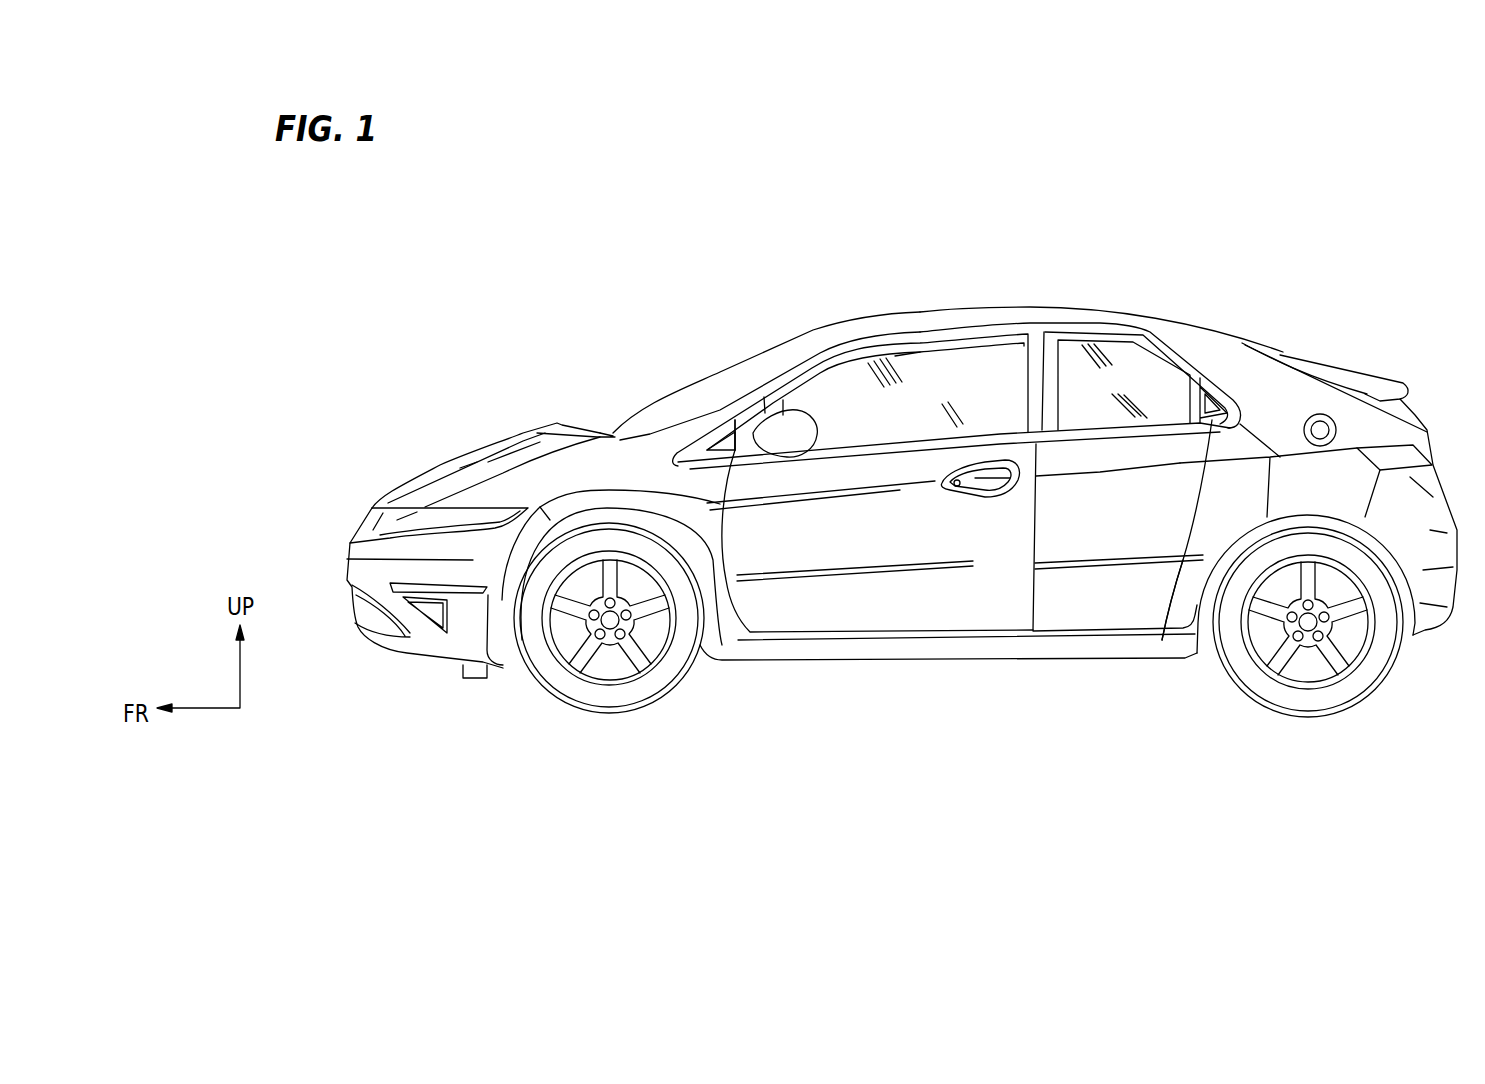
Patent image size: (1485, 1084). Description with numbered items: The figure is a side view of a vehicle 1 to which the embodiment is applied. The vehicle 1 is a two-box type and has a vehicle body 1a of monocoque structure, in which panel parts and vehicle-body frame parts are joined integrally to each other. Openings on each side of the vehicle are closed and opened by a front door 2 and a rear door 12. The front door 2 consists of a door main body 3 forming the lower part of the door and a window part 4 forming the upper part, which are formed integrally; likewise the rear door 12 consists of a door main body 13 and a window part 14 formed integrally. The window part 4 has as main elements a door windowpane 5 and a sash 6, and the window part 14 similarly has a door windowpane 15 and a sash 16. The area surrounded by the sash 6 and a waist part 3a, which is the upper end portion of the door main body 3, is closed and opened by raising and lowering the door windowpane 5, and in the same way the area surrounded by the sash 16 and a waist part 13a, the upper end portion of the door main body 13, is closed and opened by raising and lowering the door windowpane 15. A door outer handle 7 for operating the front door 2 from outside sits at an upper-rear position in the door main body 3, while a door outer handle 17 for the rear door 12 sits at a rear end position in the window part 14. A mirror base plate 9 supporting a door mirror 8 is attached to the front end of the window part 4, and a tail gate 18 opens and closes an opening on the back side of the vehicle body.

The vehicle 1 is at (571, 268).
The vehicle body 1a is at (538, 428).
The front door 2 is at (1015, 327).
The door main body 3 is at (838, 612).
The waist part 3a is at (922, 470).
The window part 4 is at (908, 247).
The door windowpane 5 is at (920, 360).
The sash 6 is at (887, 353).
The door outer handle 7 is at (985, 498).
The door mirror 8 is at (800, 423).
The mirror base plate 9 is at (735, 420).
The rear door 12 is at (1113, 328).
The door main body 13 is at (1085, 612).
The waist part 13a is at (1083, 457).
The window part 14 is at (1153, 247).
The door windowpane 15 is at (1137, 355).
The sash 16 is at (1173, 357).
The door outer handle 17 is at (1162, 640).
The tail gate 18 is at (1323, 357).